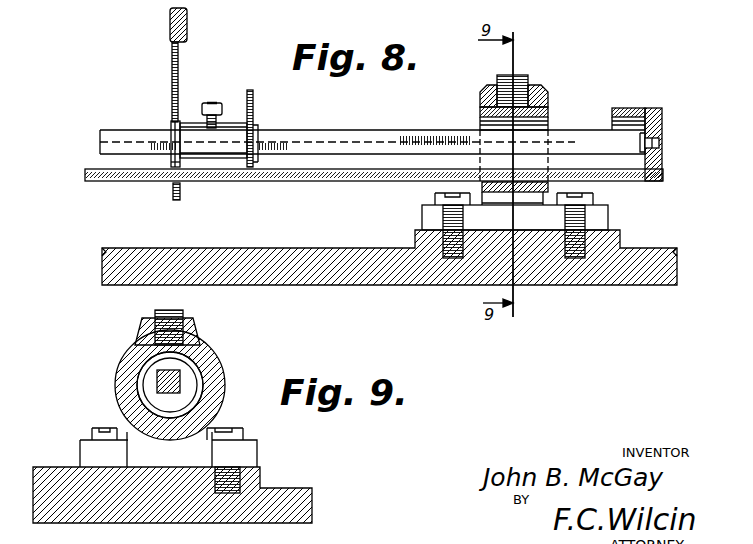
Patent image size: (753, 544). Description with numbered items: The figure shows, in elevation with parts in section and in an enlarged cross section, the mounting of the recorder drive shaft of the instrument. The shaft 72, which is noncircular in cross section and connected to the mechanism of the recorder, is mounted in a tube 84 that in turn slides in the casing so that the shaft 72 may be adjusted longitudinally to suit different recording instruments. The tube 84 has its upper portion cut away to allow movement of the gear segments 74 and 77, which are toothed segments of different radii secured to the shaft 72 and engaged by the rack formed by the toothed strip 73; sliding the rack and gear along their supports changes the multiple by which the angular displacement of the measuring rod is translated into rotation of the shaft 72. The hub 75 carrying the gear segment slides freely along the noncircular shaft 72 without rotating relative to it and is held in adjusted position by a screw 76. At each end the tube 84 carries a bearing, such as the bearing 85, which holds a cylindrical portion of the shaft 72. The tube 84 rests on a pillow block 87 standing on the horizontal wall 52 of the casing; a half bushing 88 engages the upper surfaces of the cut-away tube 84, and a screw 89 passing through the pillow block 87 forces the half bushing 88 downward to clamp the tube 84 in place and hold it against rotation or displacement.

In FIG. 8, the horizontal wall 52 is at (147, 252).
In FIG. 9, the horizontal wall 52 is at (295, 490).
In FIG. 8, the shaft 72 is at (352, 130).
In FIG. 9, the shaft 72 is at (157, 386).
In FIG. 8, the toothed strip 73 is at (170, 24).
In FIG. 8, the gear segment 74 is at (172, 72).
In FIG. 8, the hub 75 is at (227, 163).
In FIG. 8, the screw 76 is at (211, 103).
In FIG. 8, the gear segment 77 is at (253, 112).
In FIG. 8, the tube 84 is at (632, 108).
In FIG. 8, the bearing 85 is at (662, 124).
In FIG. 8, the pillow block 87 is at (545, 97).
In FIG. 9, the pillow block 87 is at (118, 362).
In FIG. 8, the half bushing 88 is at (549, 112).
In FIG. 9, the half bushing 88 is at (200, 366).
In FIG. 8, the screw 89 is at (525, 78).
In FIG. 9, the screw 89 is at (190, 331).